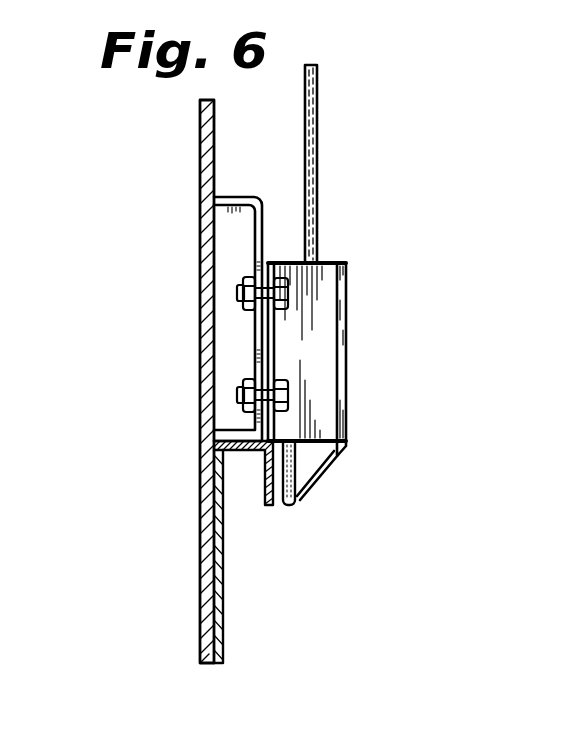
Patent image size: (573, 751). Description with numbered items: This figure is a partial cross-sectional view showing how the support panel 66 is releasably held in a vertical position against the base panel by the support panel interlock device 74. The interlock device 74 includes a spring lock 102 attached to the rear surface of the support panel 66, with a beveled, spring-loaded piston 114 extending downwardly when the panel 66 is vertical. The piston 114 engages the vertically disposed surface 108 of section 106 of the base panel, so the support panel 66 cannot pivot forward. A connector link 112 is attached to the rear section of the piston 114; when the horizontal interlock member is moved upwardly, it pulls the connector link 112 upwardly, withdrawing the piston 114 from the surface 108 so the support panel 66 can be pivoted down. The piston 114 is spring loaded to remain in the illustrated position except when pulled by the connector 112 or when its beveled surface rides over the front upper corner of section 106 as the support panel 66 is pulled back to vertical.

The support panel 66 is at (200, 148).
The support panel interlock device 74 is at (266, 238).
The spring lock 102 is at (334, 327).
The section of base panel 106 is at (224, 450).
The vertically disposed surface 108 is at (300, 500).
The connector link 112 is at (308, 140).
The piston 114 is at (311, 462).